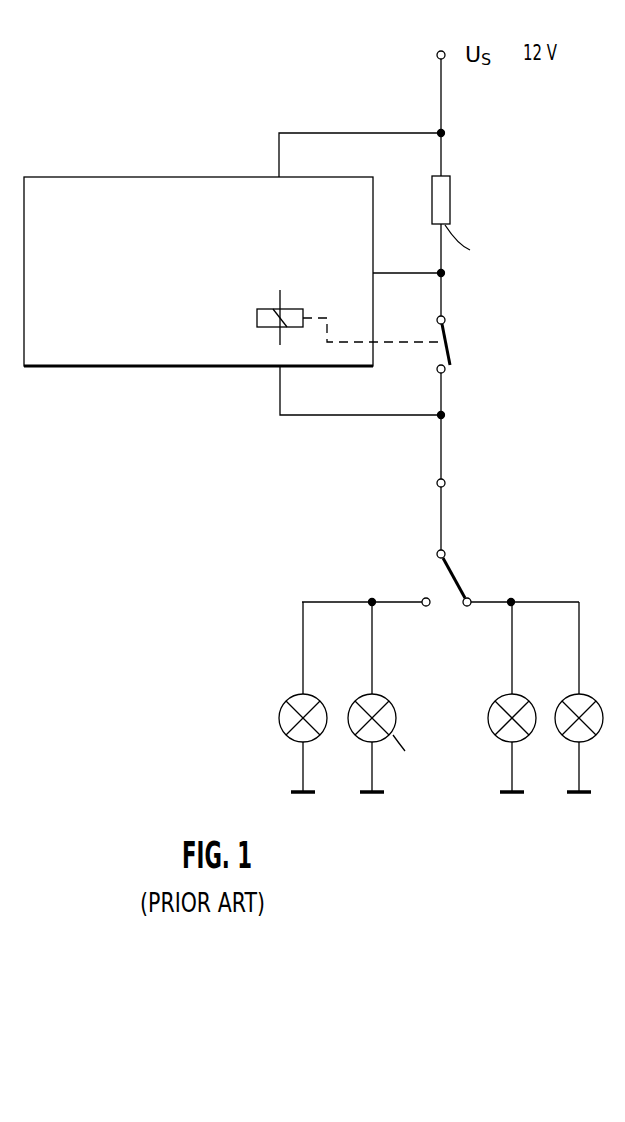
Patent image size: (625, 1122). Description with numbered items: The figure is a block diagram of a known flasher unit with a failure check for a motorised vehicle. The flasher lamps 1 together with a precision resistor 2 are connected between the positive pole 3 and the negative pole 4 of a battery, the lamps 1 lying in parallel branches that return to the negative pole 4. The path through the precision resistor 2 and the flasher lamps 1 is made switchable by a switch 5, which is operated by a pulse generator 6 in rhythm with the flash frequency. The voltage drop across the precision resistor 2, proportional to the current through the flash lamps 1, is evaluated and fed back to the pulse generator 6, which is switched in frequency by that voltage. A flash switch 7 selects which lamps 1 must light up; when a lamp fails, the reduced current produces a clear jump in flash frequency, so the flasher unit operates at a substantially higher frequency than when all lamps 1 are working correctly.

The flasher lamps 1 is at (381, 699).
The precision resistor 2 is at (446, 202).
The positive pole 3 is at (439, 50).
The negative pole 4 is at (575, 795).
The switch 5 is at (452, 341).
The pulse generator 6 is at (163, 188).
The flash switch 7 is at (456, 575).